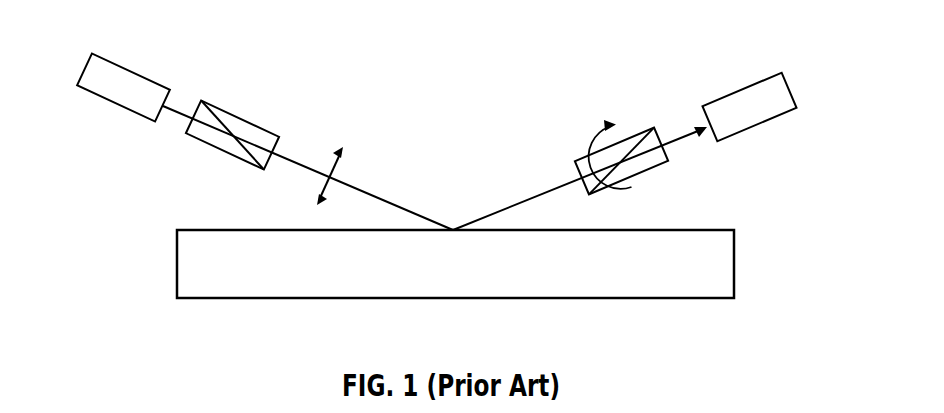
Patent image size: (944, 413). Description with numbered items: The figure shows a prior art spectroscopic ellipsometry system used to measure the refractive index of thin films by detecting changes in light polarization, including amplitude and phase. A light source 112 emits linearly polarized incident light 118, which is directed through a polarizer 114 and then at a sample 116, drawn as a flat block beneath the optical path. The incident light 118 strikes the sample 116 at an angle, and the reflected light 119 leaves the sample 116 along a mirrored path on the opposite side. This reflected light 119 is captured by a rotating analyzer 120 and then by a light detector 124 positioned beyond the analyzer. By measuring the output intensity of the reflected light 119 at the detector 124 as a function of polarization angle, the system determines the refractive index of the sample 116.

The light source 112 is at (105, 97).
The polarizer 114 is at (250, 118).
The sample 116 is at (177, 267).
The linearly polarized incident light 118 is at (393, 200).
The reflected light 119 is at (482, 218).
The rotating analyzer 120 is at (625, 135).
The light detector 124 is at (768, 122).